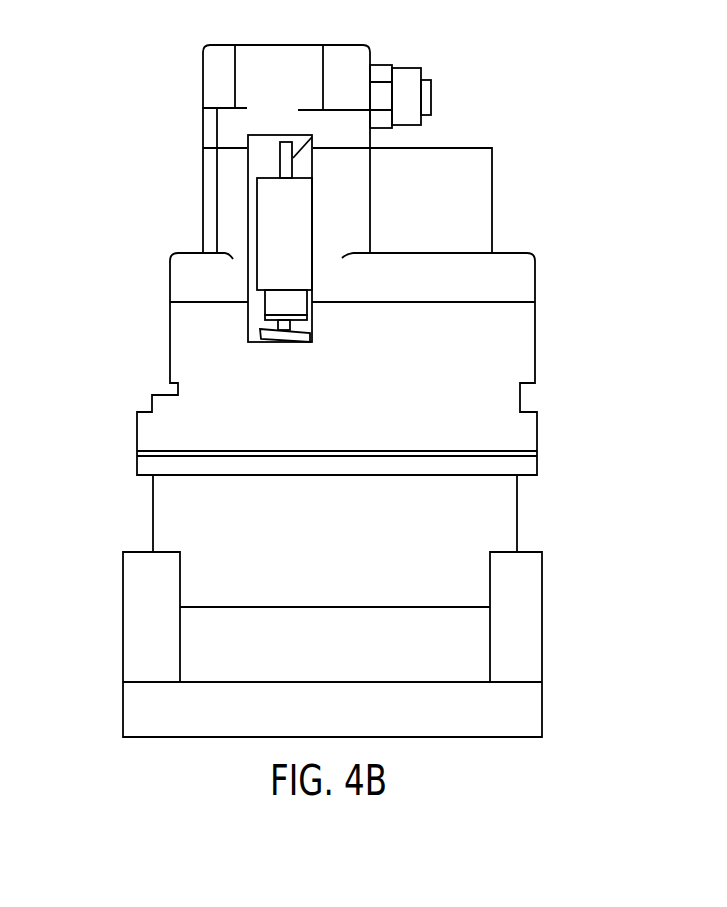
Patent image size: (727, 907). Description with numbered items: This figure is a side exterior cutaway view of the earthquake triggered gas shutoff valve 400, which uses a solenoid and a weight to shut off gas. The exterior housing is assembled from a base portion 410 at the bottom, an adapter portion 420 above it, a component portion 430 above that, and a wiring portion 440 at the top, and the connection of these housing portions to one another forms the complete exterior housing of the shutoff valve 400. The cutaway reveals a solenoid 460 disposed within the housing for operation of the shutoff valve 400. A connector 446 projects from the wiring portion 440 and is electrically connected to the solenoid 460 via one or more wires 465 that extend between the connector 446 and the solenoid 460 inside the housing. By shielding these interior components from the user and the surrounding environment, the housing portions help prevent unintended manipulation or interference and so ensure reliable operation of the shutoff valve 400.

The earthquake triggered gas shutoff valve 400 is at (175, 34).
The wiring portion 440 is at (175, 86).
The connector 446 is at (405, 77).
The component portion 430 is at (175, 203).
The wires 465 is at (296, 132).
The solenoid 460 is at (253, 208).
The adapter portion 420 is at (145, 329).
The base portion 410 is at (98, 534).